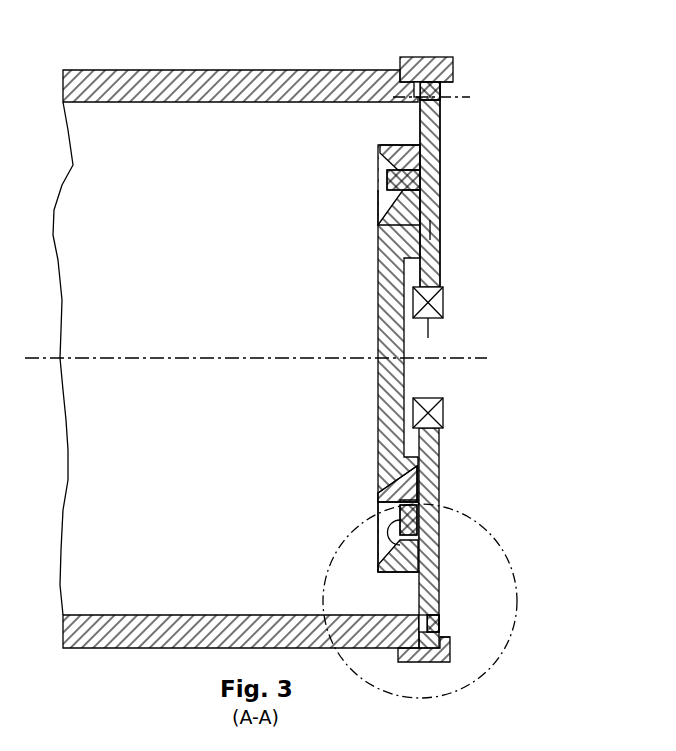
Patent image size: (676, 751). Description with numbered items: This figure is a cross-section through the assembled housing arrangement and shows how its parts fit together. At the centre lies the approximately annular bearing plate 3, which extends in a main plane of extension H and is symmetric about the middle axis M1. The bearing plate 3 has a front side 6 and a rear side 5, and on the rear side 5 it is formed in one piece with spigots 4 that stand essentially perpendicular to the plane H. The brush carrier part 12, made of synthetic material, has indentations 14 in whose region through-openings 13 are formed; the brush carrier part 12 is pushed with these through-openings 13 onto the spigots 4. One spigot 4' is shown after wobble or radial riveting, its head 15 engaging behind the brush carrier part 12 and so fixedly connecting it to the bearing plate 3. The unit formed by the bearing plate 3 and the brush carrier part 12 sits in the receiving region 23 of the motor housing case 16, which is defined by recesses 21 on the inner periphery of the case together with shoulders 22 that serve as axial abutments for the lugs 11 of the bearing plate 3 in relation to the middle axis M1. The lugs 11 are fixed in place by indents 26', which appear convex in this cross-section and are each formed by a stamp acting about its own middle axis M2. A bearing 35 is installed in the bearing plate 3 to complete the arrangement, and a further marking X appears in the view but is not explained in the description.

The motor housing case 16 is at (278, 70).
The lugs 11 is at (435, 57).
The shoulder 22 is at (415, 82).
The recesses 21 is at (452, 80).
The middle axis M2 is at (475, 95).
The indent 26' is at (462, 357).
The rear side 5 is at (415, 135).
The front side 6 is at (442, 130).
The bearing plate 3 is at (432, 155).
The indentations 14 is at (387, 163).
The spigots 4 is at (380, 179).
The through-openings 13 is at (407, 200).
The main plane of extension H is at (428, 230).
The bearing 35 is at (438, 300).
The middle axis M1 is at (231, 356).
The brush carrier part 12 is at (385, 393).
The receiving region 23 is at (428, 375).
The head 15 is at (397, 533).
The spigot 4' is at (442, 532).
The detail region X is at (520, 578).